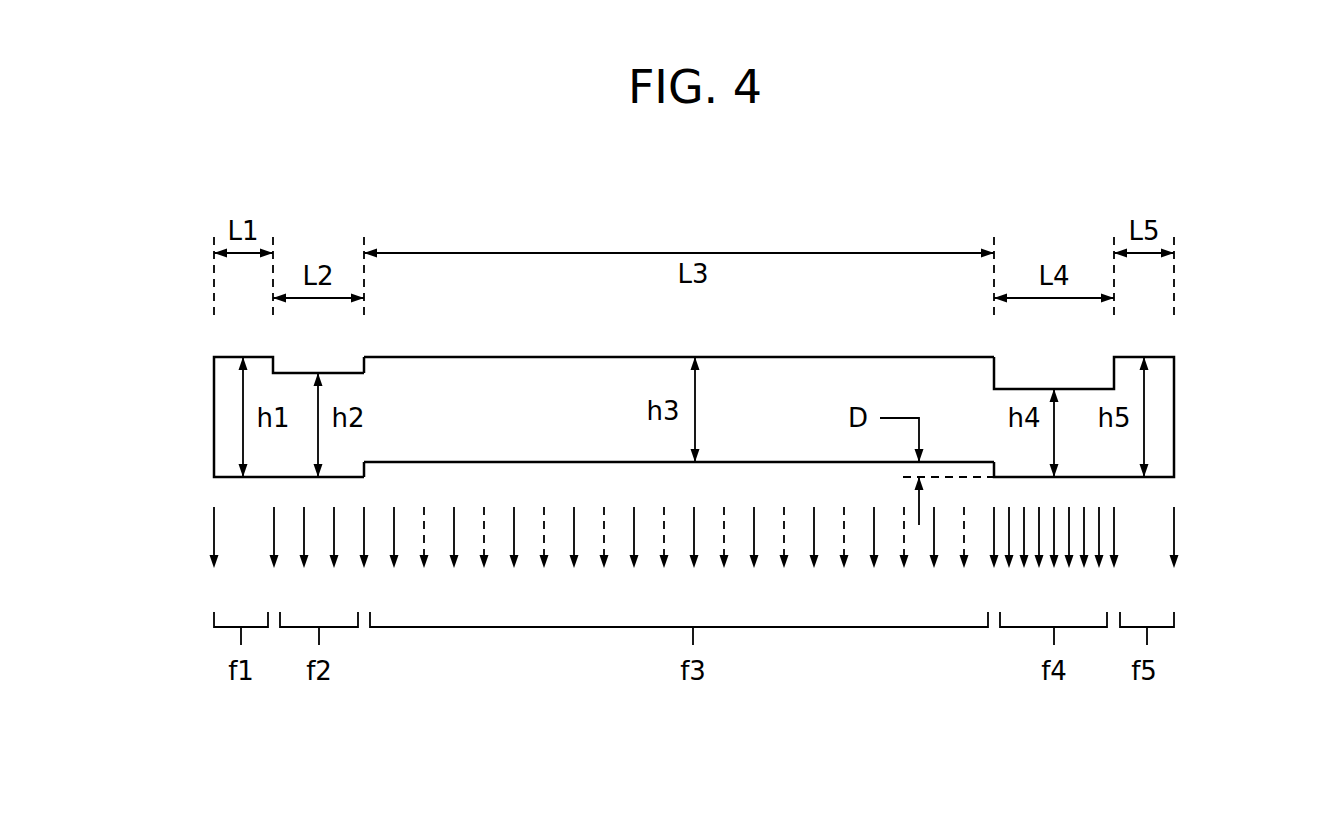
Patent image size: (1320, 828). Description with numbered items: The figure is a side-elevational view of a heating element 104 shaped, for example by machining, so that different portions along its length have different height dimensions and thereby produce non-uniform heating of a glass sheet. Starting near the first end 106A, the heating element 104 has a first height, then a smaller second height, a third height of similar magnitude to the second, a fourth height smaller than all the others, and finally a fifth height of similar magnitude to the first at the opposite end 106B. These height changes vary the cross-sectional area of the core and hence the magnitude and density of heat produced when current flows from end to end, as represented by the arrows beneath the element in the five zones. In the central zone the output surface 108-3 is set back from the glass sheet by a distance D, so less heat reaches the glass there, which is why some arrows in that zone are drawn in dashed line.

The heating element 104 is at (717, 174).
The first end 106A is at (242, 417).
The second end 106B is at (1138, 417).
The output surface 108-3 is at (457, 463).